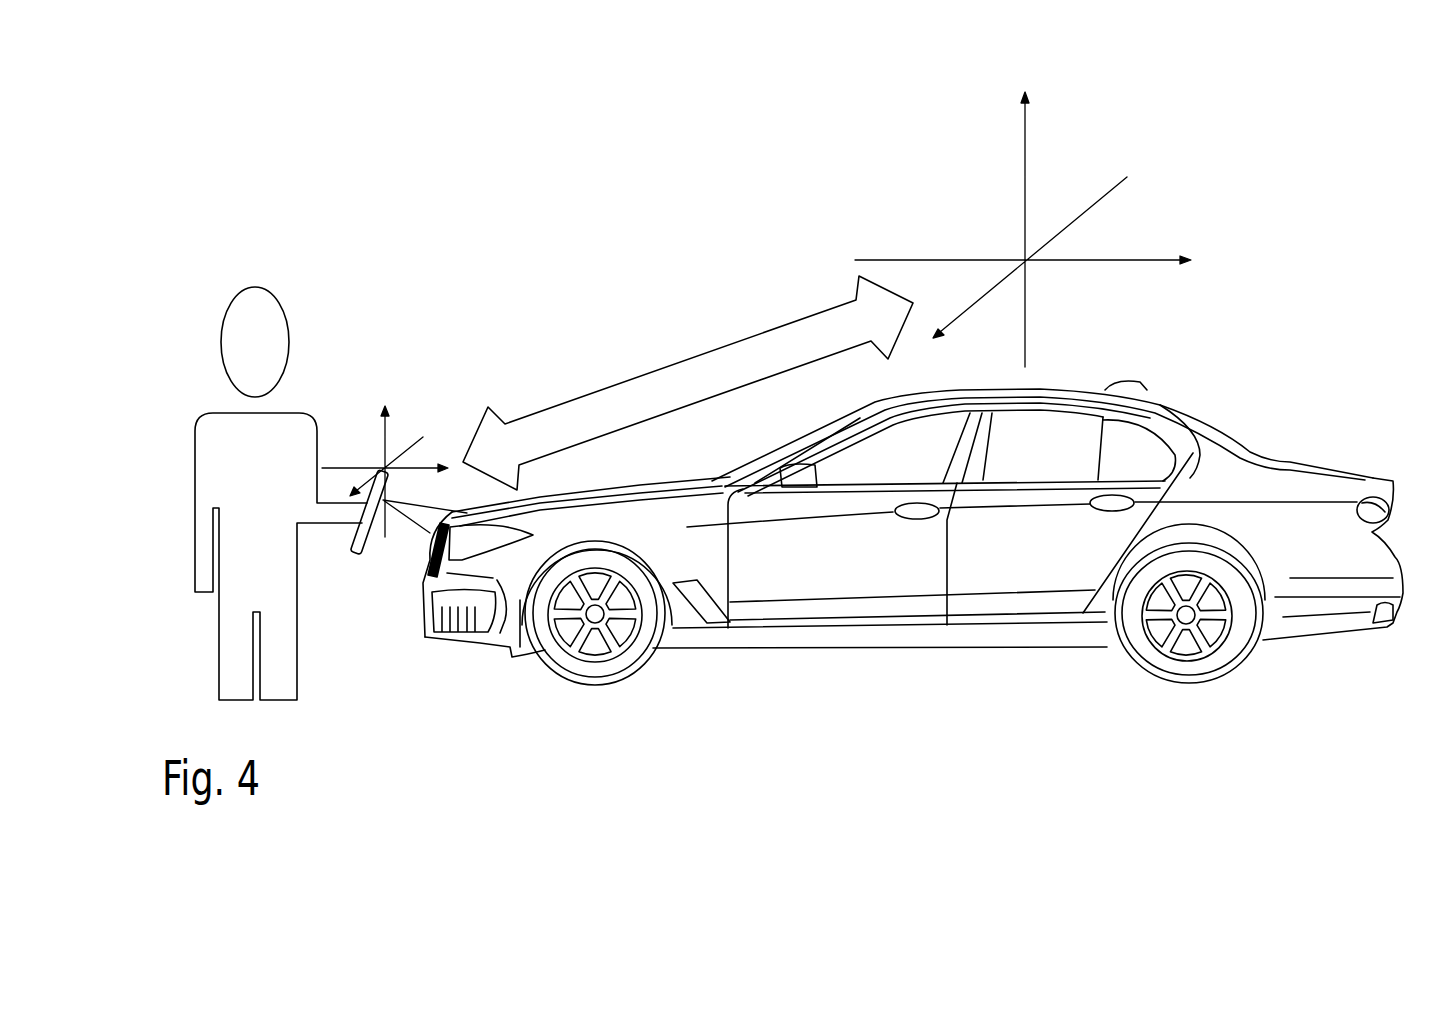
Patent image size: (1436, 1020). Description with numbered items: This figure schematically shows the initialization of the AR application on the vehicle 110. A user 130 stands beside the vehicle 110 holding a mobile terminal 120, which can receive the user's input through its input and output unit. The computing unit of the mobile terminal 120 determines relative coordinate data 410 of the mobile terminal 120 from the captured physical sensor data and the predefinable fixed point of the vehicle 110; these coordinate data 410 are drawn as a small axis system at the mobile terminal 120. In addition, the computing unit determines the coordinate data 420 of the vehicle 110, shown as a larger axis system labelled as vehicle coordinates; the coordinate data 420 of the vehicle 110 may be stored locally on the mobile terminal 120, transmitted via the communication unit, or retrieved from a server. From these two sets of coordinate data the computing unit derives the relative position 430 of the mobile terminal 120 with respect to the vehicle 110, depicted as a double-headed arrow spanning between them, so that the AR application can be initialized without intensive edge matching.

The vehicle 110 is at (1233, 463).
The mobile terminal 120 is at (355, 556).
The user 130 is at (256, 286).
The coordinate data of the mobile terminal 410 is at (388, 433).
The coordinate data of the vehicle 420 is at (1023, 181).
The relative position 430 is at (741, 337).